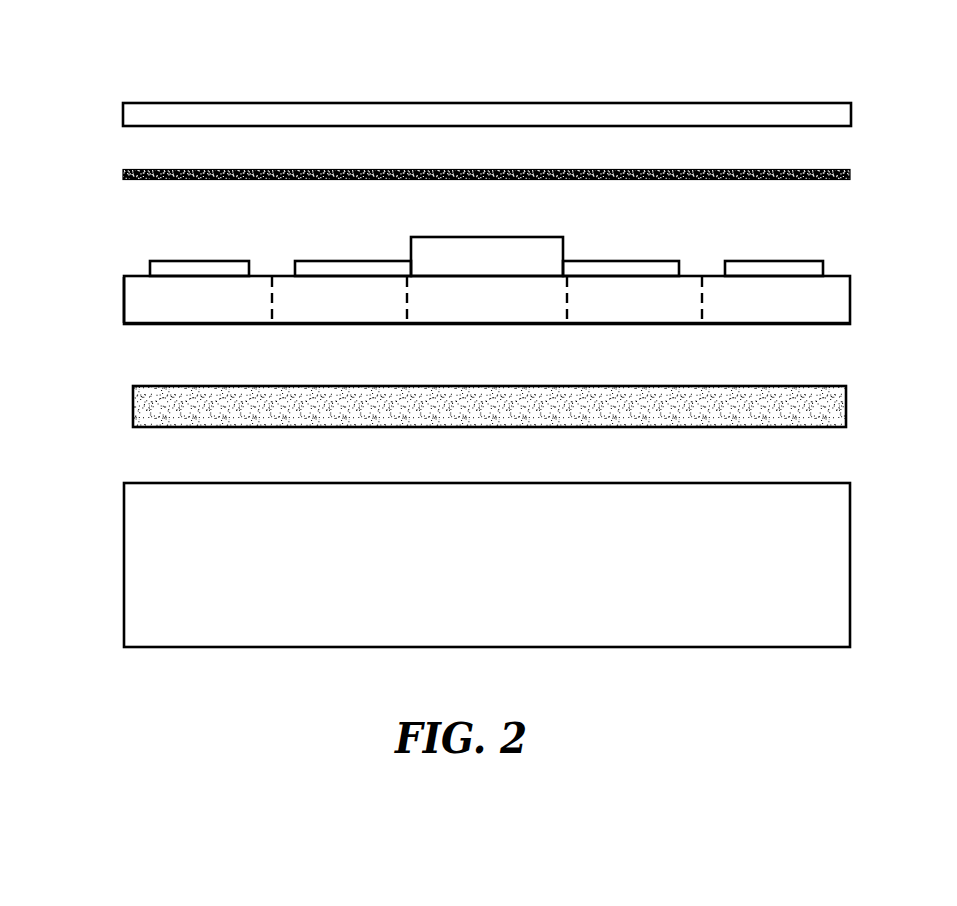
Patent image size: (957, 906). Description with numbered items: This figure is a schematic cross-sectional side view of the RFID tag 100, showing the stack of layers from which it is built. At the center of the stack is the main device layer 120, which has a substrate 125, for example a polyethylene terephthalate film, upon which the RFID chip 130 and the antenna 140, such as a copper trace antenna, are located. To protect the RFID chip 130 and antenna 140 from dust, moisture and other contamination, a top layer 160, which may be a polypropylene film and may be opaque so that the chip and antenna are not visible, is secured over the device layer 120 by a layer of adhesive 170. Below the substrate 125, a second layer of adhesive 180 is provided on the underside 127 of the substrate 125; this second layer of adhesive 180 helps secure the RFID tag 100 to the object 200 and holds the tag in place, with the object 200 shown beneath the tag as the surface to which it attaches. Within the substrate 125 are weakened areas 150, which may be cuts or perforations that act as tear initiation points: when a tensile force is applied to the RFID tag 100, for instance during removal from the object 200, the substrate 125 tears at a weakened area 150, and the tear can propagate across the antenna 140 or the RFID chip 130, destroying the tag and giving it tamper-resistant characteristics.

The RFID tag 100 is at (347, 64).
The top layer 160 is at (123, 115).
The layer of adhesive 170 is at (123, 173).
The antenna 140 is at (313, 261).
The RFID chip 130 is at (510, 237).
The device layer 120 is at (124, 290).
The substrate 125 is at (124, 308).
The underside 127 is at (835, 324).
The weakened areas 150 is at (272, 297).
The second layer of adhesive 180 is at (133, 395).
The object 200 is at (138, 573).